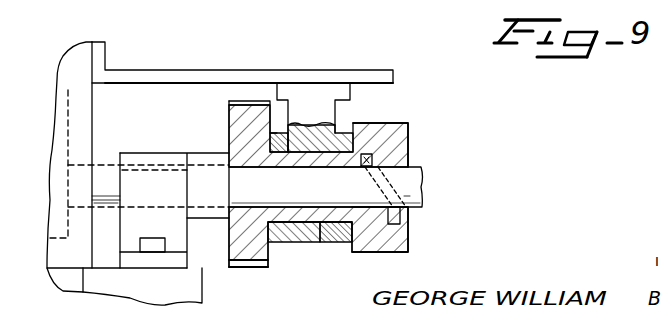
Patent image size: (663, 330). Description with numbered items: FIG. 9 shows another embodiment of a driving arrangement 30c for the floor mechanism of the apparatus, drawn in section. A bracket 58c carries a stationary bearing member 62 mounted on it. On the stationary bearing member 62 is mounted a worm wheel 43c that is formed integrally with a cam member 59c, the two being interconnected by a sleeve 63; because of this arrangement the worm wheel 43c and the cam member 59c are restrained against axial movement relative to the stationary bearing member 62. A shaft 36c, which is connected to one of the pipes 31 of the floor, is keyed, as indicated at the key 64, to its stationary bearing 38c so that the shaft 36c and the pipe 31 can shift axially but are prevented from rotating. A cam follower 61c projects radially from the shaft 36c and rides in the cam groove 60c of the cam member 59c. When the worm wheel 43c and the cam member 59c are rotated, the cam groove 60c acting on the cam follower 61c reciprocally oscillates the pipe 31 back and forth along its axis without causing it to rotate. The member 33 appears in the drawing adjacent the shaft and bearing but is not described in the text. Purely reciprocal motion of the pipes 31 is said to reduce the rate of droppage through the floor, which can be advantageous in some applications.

The pipe 31 is at (62, 126).
The bracket 58c is at (107, 53).
The shaft 36c is at (107, 177).
The key 64 is at (147, 165).
The stationary bearing 38c is at (133, 237).
The member 33 is at (192, 270).
The sleeve 63 is at (318, 242).
The worm wheel 43c is at (253, 263).
The stationary bearing member 62 is at (313, 95).
The cam member 59c is at (384, 124).
The driving arrangement 30c is at (442, 181).
The cam follower 61c is at (372, 158).
The cam groove 60c is at (400, 214).